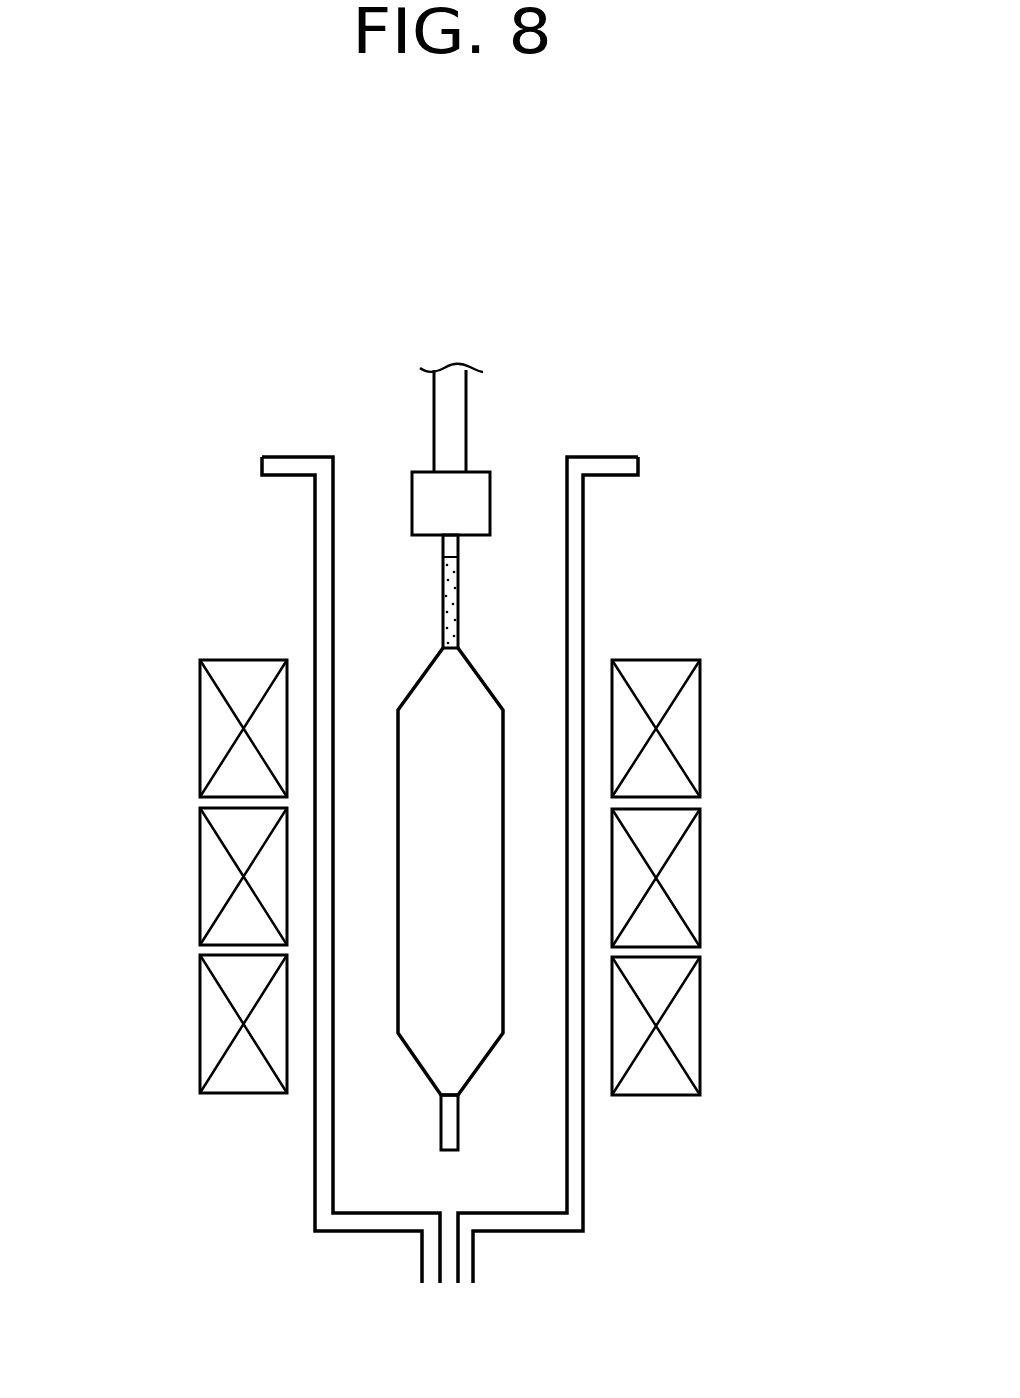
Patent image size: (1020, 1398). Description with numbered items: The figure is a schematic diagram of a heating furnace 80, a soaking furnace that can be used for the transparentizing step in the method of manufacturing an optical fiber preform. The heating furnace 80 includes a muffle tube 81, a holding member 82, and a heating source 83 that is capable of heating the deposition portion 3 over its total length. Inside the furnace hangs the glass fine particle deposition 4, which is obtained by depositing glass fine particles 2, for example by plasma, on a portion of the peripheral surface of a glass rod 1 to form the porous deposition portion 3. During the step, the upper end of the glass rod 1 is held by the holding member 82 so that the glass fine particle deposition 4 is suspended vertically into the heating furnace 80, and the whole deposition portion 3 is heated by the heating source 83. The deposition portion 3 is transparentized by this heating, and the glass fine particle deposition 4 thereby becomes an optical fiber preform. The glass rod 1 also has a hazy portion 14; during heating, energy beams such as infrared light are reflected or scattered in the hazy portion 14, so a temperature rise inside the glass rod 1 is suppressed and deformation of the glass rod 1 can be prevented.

The heating furnace 80 is at (730, 442).
The muffle tube 81 is at (584, 535).
The holding member 82 is at (411, 493).
The heating source 83 is at (200, 1010).
The glass rod 1 is at (440, 545).
The hazy portion 14 is at (440, 602).
The glass fine particles 2 is at (503, 947).
The deposition portion 3 is at (503, 852).
The glass fine particle deposition 4 is at (493, 662).